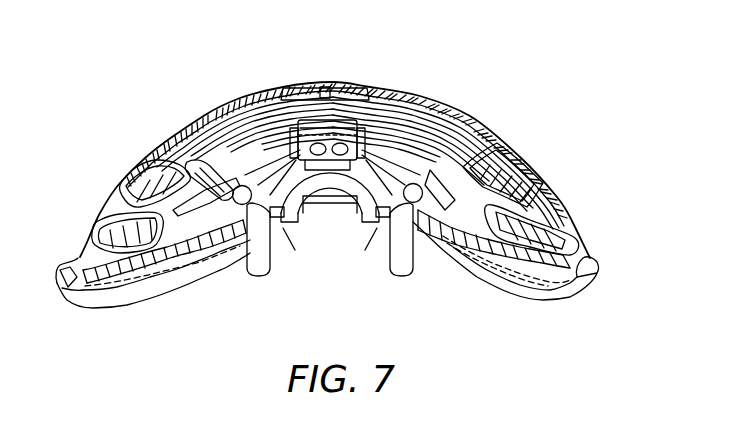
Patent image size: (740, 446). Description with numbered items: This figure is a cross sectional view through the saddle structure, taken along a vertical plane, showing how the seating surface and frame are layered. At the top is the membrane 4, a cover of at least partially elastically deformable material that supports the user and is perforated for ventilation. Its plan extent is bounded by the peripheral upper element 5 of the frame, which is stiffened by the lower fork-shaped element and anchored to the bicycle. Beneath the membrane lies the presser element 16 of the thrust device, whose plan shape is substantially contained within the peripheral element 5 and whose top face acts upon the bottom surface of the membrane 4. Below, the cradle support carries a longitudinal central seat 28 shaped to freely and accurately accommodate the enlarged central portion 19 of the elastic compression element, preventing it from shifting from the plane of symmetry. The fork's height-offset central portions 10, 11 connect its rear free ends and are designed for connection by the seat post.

The membrane 4 is at (424, 95).
The peripheral upper element 5 is at (592, 268).
The height-offset central portion 10 is at (284, 248).
The height-offset central portion 11 is at (374, 248).
The presser element 16 is at (107, 268).
The central portion 19 is at (328, 142).
The longitudinal central seat 28 is at (338, 174).